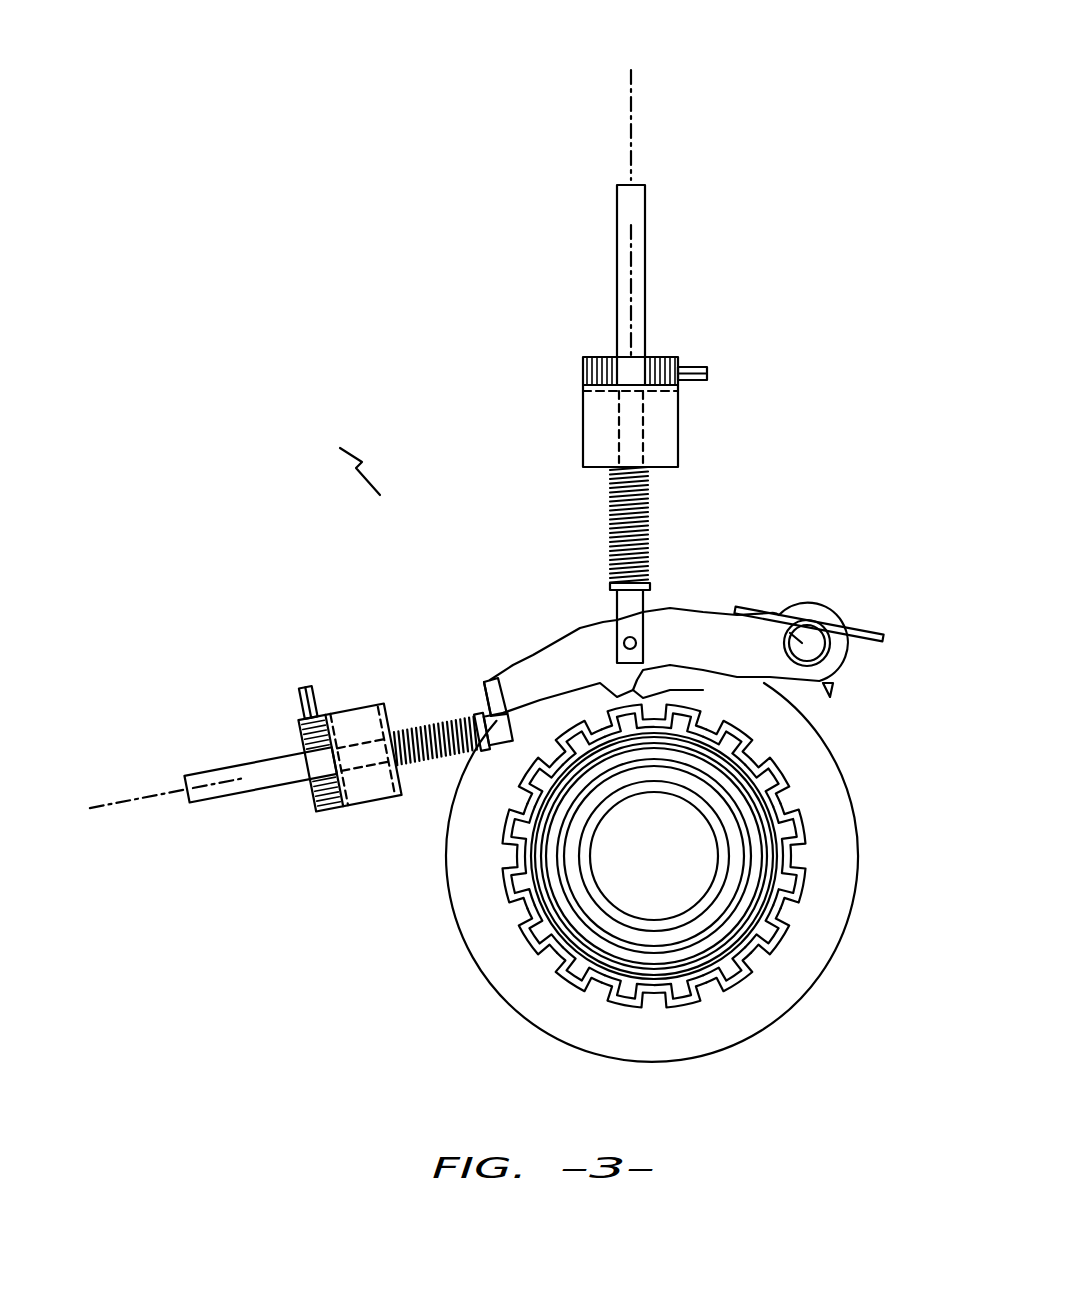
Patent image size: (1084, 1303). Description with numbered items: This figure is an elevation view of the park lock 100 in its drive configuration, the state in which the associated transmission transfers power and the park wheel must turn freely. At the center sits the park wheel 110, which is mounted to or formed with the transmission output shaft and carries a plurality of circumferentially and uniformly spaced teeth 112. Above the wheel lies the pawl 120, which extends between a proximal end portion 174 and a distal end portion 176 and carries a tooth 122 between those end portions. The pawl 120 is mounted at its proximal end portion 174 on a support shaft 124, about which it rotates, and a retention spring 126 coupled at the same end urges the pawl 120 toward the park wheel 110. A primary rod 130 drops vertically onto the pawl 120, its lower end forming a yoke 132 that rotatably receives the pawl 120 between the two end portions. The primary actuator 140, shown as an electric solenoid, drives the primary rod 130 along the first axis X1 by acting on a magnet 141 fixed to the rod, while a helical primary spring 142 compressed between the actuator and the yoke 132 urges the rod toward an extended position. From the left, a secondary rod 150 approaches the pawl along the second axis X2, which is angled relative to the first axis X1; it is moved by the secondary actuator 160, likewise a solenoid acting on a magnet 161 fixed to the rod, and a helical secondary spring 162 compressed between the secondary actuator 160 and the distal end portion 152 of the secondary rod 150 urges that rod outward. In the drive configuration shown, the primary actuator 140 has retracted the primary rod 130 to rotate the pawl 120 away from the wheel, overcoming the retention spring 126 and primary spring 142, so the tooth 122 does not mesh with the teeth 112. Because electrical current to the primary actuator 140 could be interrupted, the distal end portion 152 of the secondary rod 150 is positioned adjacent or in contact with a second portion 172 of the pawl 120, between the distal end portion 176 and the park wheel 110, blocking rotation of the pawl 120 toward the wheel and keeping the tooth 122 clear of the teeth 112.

The park lock 100 is at (338, 455).
The park wheel 110 is at (808, 995).
The teeth 112 is at (800, 880).
The pawl 120 is at (683, 622).
The tooth 122 is at (680, 684).
The support shaft 124 is at (782, 617).
The retention spring 126 is at (853, 622).
The primary rod 130 is at (645, 277).
The yoke 132 is at (625, 622).
The primary actuator 140 is at (680, 443).
The magnet 141 is at (601, 390).
The primary spring 142 is at (648, 532).
The secondary rod 150 is at (252, 763).
The distal end portion 152 is at (498, 757).
The secondary actuator 160 is at (366, 808).
The magnet 161 is at (330, 815).
The secondary spring 162 is at (420, 727).
The second portion 172 is at (503, 705).
The proximal end portion 174 is at (833, 690).
The distal end portion 176 is at (470, 697).
The first axis X1 is at (630, 106).
The second axis X2 is at (133, 800).